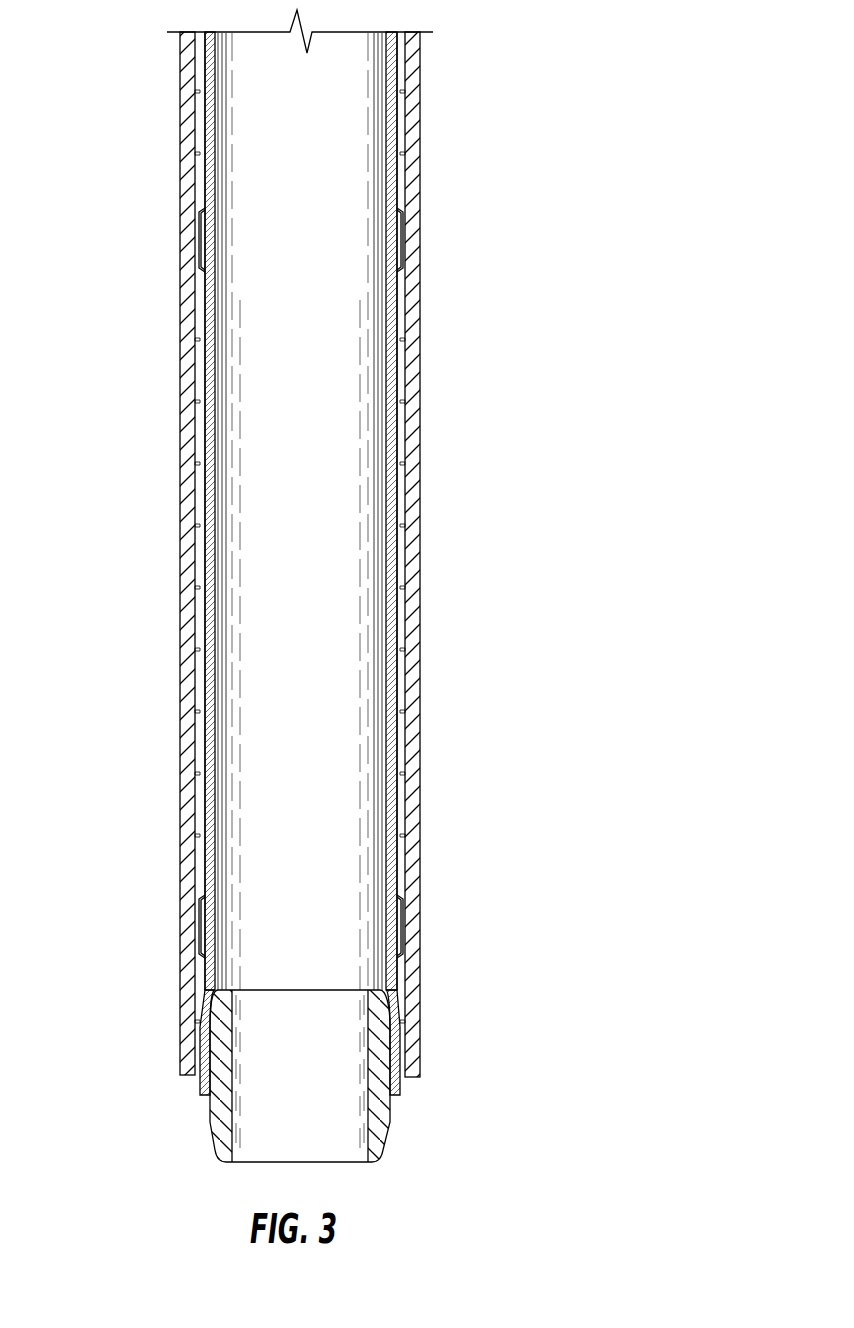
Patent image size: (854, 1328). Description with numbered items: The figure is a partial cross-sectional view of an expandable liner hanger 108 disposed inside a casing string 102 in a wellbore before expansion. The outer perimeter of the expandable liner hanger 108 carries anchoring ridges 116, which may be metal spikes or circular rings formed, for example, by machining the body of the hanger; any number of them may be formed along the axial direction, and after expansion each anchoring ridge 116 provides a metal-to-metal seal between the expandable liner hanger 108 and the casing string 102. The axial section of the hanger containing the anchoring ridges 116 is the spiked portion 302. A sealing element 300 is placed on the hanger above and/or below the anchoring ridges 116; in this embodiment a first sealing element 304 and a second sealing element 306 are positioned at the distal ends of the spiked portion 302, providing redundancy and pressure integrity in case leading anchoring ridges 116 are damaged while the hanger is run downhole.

The sealing element 300 is at (136, 205).
The spiked portion 302 is at (457, 540).
The casing string 102 is at (190, 543).
The expandable liner hanger 108 is at (208, 367).
The anchoring ridges 116 is at (203, 712).
The first sealing element 304 is at (201, 932).
The second sealing element 306 is at (401, 240).